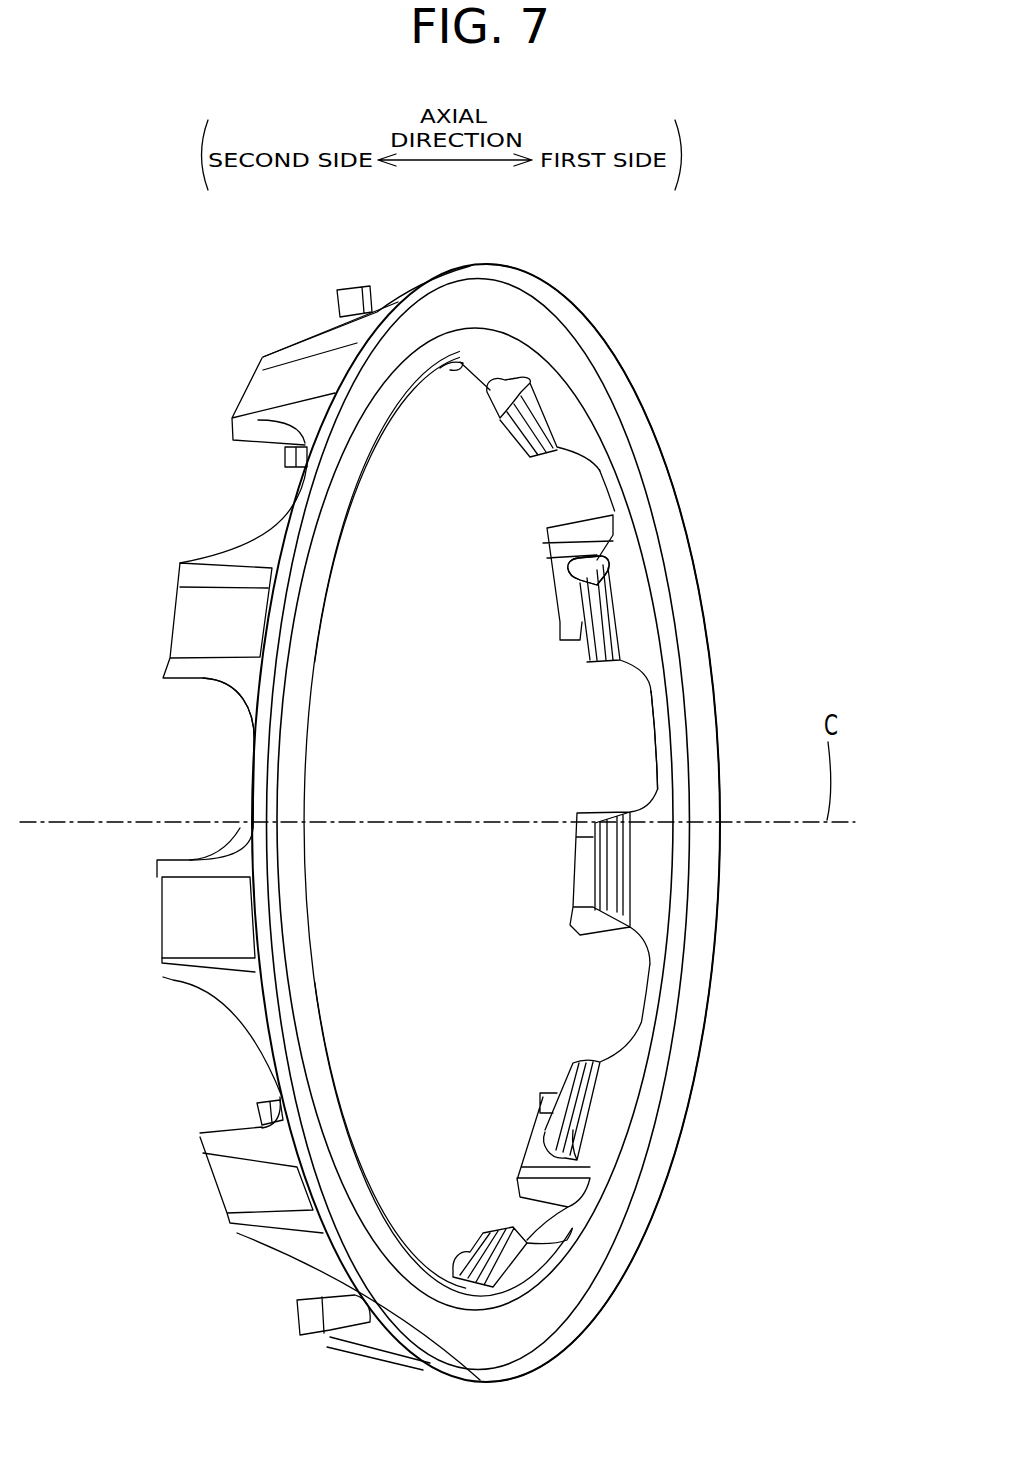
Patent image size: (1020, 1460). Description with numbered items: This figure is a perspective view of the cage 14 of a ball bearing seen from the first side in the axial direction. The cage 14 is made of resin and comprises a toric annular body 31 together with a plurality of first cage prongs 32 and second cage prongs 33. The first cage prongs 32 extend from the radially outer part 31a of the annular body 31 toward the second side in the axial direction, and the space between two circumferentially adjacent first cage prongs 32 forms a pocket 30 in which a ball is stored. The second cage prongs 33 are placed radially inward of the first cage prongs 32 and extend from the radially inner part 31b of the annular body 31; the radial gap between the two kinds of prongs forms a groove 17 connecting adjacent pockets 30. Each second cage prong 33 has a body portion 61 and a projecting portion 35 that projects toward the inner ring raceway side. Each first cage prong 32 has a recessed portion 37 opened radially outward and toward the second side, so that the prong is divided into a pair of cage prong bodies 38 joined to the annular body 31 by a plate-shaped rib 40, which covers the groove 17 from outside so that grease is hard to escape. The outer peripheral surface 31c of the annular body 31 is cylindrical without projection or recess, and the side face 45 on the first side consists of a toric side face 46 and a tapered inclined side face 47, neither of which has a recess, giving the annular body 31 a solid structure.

The cage 14 is at (620, 328).
The groove 17 is at (585, 522).
The pocket 30 is at (137, 749).
The annular body 31 is at (716, 700).
The radially outer part 31a is at (703, 618).
The radially inner part 31b is at (684, 898).
The outer peripheral surface 31c is at (300, 495).
The first cage prong 32 is at (262, 340).
The second cage prong 33 is at (582, 670).
The projecting portion 35 is at (486, 1235).
The recessed portion 37 is at (221, 597).
The cage prong body 38 is at (165, 871).
The rib 40 is at (180, 923).
The side face 45 is at (745, 463).
The toric side face 46 is at (681, 523).
The inclined side face 47 is at (637, 485).
The body portion 61 is at (533, 1257).